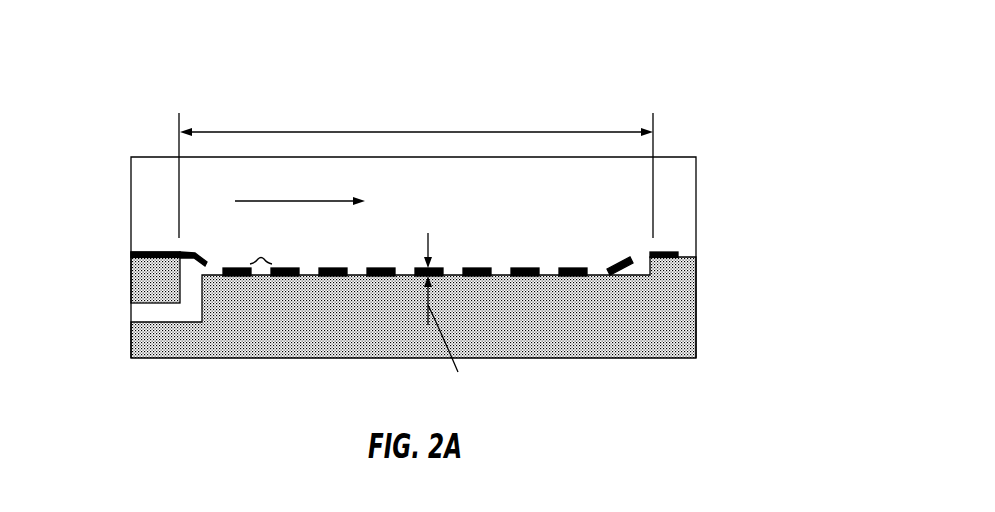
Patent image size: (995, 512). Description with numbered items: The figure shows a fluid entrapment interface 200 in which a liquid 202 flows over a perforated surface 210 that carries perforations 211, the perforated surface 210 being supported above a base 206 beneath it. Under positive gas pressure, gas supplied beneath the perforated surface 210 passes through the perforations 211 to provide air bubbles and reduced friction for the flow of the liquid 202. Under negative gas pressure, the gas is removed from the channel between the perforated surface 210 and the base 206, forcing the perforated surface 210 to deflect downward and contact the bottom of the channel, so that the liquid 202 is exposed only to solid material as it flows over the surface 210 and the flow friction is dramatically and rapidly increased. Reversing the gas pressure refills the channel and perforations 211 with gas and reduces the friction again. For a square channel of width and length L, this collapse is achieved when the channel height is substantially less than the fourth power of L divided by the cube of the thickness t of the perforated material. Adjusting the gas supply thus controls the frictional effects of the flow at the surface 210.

The fluid entrapment interface 200 is at (654, 64).
The liquid 202 is at (142, 197).
The substrate 206 is at (142, 313).
The perforated surface 210 is at (478, 270).
The perforations 211 is at (261, 243).